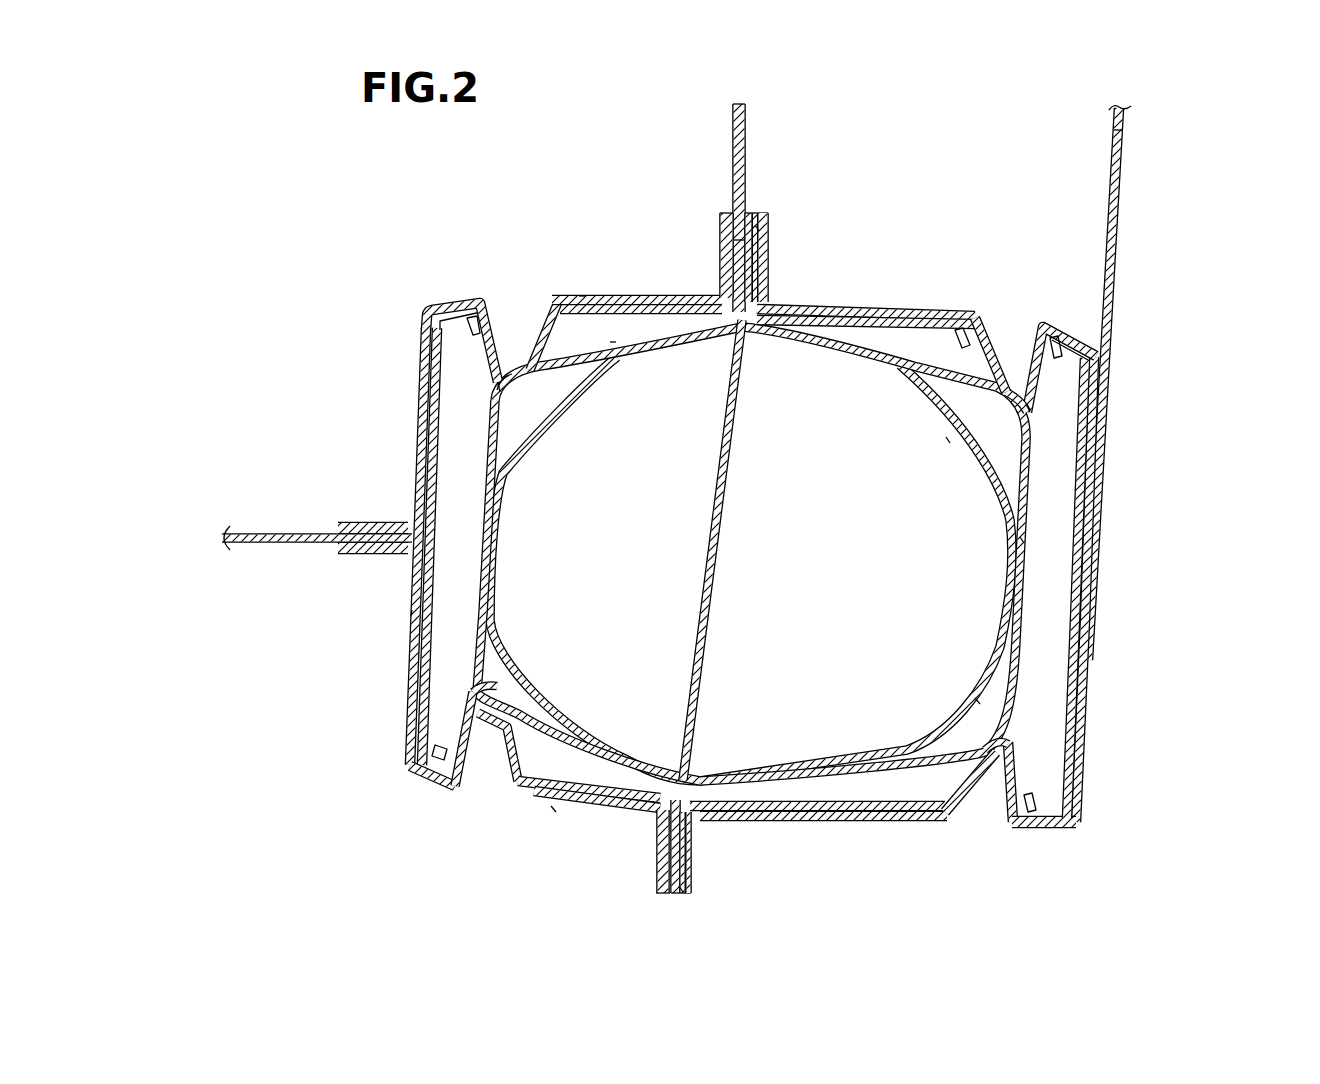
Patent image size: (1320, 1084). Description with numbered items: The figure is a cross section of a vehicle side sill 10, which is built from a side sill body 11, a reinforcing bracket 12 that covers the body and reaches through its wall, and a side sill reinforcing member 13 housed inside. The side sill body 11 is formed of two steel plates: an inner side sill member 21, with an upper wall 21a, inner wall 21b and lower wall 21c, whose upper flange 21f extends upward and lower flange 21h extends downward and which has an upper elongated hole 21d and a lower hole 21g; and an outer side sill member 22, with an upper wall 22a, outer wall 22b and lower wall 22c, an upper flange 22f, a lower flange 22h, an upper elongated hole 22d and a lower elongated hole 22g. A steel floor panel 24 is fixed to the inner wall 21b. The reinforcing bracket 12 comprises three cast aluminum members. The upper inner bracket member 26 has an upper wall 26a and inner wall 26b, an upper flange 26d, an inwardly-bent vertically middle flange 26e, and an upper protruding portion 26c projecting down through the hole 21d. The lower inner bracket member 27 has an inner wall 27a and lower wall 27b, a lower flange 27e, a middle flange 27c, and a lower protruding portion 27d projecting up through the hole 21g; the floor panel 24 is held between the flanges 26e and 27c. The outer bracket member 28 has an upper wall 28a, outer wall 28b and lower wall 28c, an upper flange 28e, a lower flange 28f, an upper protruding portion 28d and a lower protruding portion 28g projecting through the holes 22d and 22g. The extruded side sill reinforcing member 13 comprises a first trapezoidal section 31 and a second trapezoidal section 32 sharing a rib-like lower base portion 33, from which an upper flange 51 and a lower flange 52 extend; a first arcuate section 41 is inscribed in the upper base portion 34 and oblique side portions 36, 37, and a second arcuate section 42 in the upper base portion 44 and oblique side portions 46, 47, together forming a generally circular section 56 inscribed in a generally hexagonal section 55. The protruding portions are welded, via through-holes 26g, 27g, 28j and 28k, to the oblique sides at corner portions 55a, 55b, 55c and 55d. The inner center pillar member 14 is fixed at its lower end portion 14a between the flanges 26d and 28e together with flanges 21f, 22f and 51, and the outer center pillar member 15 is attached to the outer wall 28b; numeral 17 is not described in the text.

The side sill 10 is at (388, 240).
The side sill body 11 is at (553, 810).
The reinforcing bracket 12 is at (410, 613).
The side sill reinforcing member 13 is at (613, 340).
The inner center pillar member 14 is at (736, 107).
The lower end portion 14a is at (731, 247).
The outer center pillar member 15 is at (1118, 203).
The rib tip 17 is at (1127, 152).
The inner side sill member 21 is at (426, 440).
The upper wall 21a is at (548, 318).
The inner wall 21b is at (423, 645).
The lower wall 21c is at (560, 790).
The upper elongated hole 21d is at (494, 330).
The upper flange 21f is at (750, 230).
The lower hole 21g is at (445, 780).
The lower flange 21h is at (673, 888).
The outer side sill member 22 is at (1096, 462).
The upper wall 22a is at (908, 320).
The outer wall 22b is at (1085, 593).
The lower wall 22c is at (860, 808).
The upper elongated hole 22d is at (1045, 326).
The upper flange 22f is at (760, 237).
The lower elongated hole 22g is at (1012, 828).
The lower flange 22h is at (686, 880).
The floor panel 24 is at (232, 535).
The upper inner bracket member 26 is at (424, 348).
The upper wall 26a is at (678, 296).
The inner wall 26b is at (428, 375).
The upper protruding portion 26c is at (490, 365).
The upper flange 26d is at (723, 230).
The inwardly-bent vertically middle flange 26e is at (355, 530).
The through-hole 26g is at (508, 372).
The lower inner bracket member 27 is at (408, 718).
The inner wall 27a is at (418, 590).
The lower wall 27b is at (632, 806).
The inwardly-bent vertically middle flange 27c is at (345, 548).
The lower protruding portion 27d is at (411, 725).
The lower flange 27e is at (660, 880).
The through-hole 27g is at (480, 720).
The outer bracket member 28 is at (1082, 804).
The upper wall 28a is at (878, 312).
The outer wall 28b is at (1078, 643).
The lower wall 28c is at (923, 820).
The upper protruding portion 28d is at (1040, 380).
The upper flange 28e is at (766, 250).
The lower flange 28f is at (691, 860).
The lower protruding portion 28g is at (1068, 796).
The through-hole 28j is at (1013, 380).
The through-hole 28k is at (988, 765).
The first trapezoidal section 31 is at (582, 298).
The second trapezoidal section 32 is at (917, 367).
The lower base portion 33 is at (712, 545).
The upper base portion 34 is at (485, 490).
The oblique side portion 36 is at (637, 332).
The oblique side portion 37 is at (615, 755).
The first arcuate section 41 is at (548, 420).
The second arcuate section 42 is at (948, 440).
The upper base portion 44 is at (1022, 540).
The oblique side portion 46 is at (832, 345).
The oblique side portion 47 is at (800, 790).
The upper flange 51 is at (757, 227).
The lower flange 52 is at (681, 888).
The generally hexagonal section 55 is at (1021, 680).
The corner portion 55a is at (496, 388).
The corner portion 55b is at (467, 698).
The corner portion 55c is at (1030, 408).
The corner portion 55d is at (1003, 748).
The generally circular section 56 is at (979, 700).